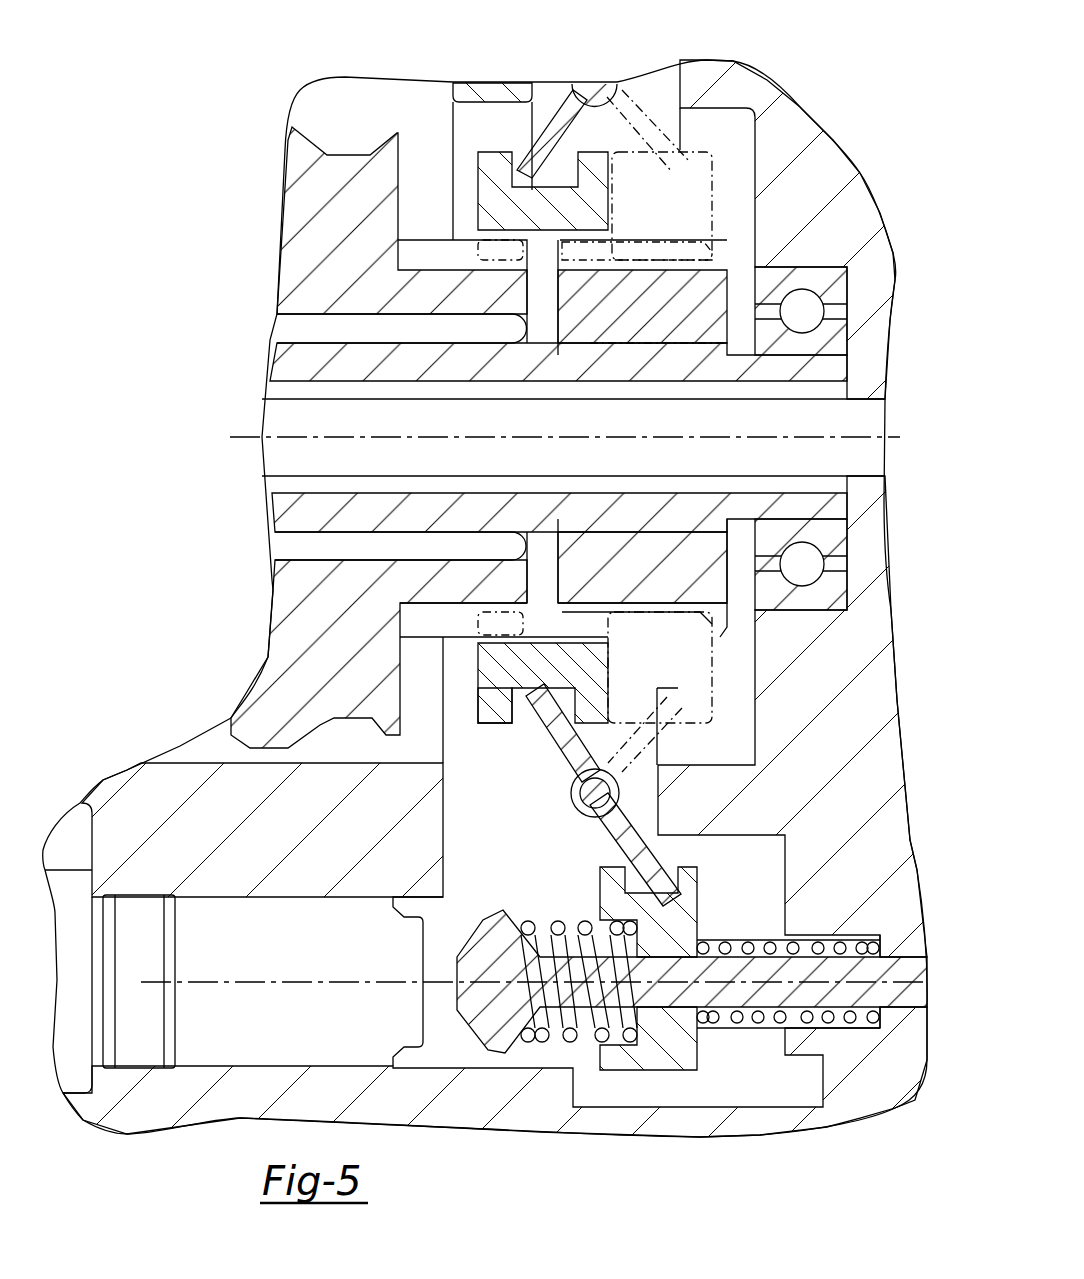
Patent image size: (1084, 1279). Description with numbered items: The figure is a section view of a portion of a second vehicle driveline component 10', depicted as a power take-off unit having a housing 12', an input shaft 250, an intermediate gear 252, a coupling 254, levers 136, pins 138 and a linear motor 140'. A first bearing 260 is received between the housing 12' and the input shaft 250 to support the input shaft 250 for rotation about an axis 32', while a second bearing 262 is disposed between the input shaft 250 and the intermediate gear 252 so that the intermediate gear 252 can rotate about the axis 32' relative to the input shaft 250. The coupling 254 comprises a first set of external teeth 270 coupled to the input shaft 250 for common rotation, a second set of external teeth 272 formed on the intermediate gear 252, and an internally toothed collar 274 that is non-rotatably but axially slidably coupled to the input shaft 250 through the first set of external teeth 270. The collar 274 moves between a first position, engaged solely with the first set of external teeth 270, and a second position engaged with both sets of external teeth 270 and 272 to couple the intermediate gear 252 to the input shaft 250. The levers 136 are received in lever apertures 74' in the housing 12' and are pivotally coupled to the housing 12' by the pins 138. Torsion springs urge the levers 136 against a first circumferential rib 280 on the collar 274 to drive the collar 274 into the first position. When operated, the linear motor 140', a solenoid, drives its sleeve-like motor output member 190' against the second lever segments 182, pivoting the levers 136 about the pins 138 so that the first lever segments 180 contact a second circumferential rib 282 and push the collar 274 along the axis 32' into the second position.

The vehicle driveline component 10' is at (495, 698).
The housing 12' is at (506, 598).
The axis 32' is at (535, 428).
The lever apertures 74' is at (642, 136).
The levers 136 is at (638, 845).
The pins 138 is at (597, 795).
The linear motor 140' is at (515, 962).
The first lever segments 180 is at (533, 737).
The second lever segments 182 is at (663, 883).
The motor output member 190' is at (700, 930).
The input shaft 250 is at (290, 512).
The intermediate gear 252 is at (305, 205).
The coupling 254 is at (724, 645).
The first bearing 260 is at (822, 270).
The second bearing 262 is at (290, 322).
The first set of external teeth 270 is at (715, 615).
The second set of external teeth 272 is at (428, 262).
The collar 274 is at (503, 672).
The first circumferential rib 280 is at (597, 165).
The second circumferential rib 282 is at (490, 698).